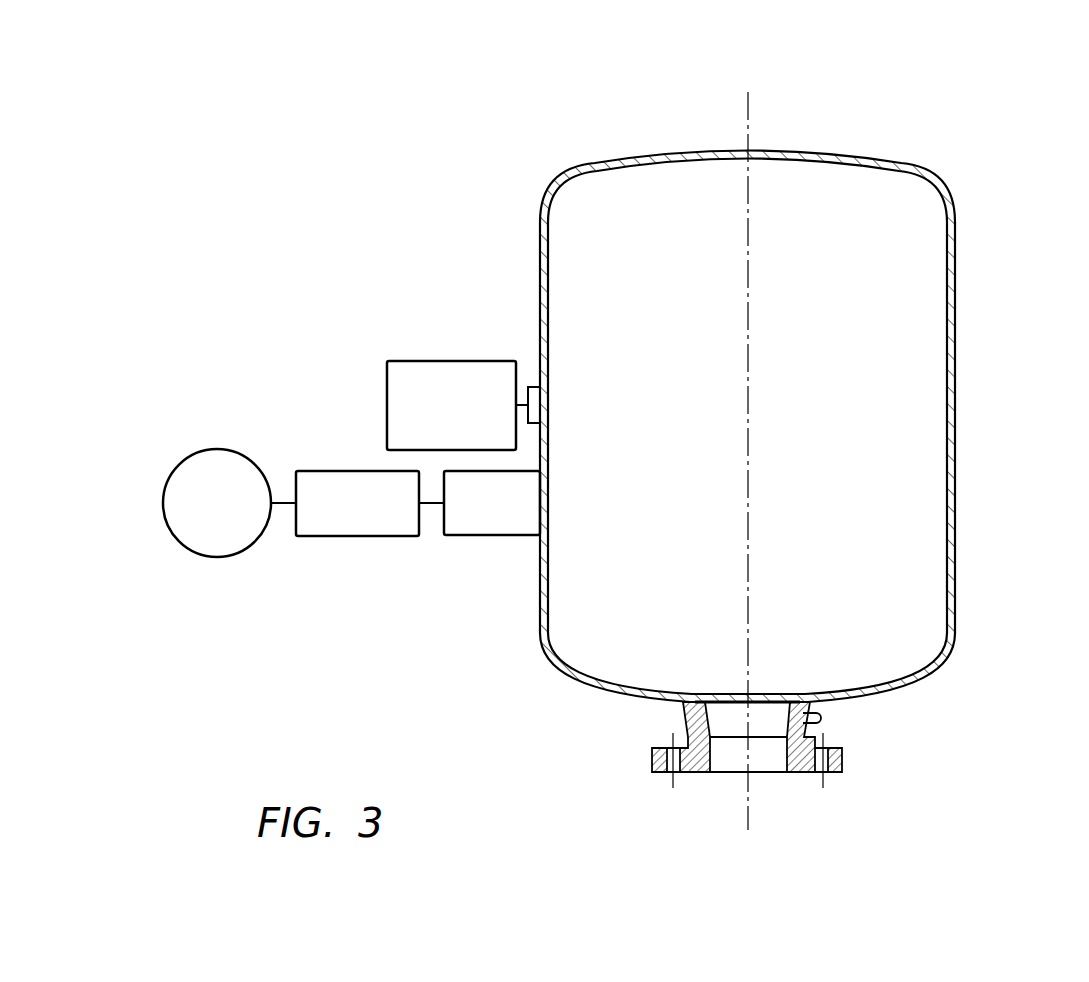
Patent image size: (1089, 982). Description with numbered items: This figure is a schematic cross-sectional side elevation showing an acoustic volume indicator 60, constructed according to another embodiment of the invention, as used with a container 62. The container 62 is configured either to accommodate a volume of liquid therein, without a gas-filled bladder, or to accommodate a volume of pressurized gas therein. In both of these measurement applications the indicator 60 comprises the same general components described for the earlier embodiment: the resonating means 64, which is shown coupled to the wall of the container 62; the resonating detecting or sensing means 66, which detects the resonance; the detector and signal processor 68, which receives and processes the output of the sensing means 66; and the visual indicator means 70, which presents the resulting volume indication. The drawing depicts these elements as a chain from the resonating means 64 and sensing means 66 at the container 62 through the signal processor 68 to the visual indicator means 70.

The acoustic volume indicator 60 is at (246, 376).
The container 62 is at (984, 138).
The resonating means 64 is at (451, 354).
The resonating detecting or sensing means 66 is at (495, 537).
The detector and signal processor 68 is at (358, 537).
The visual indicator means 70 is at (214, 557).